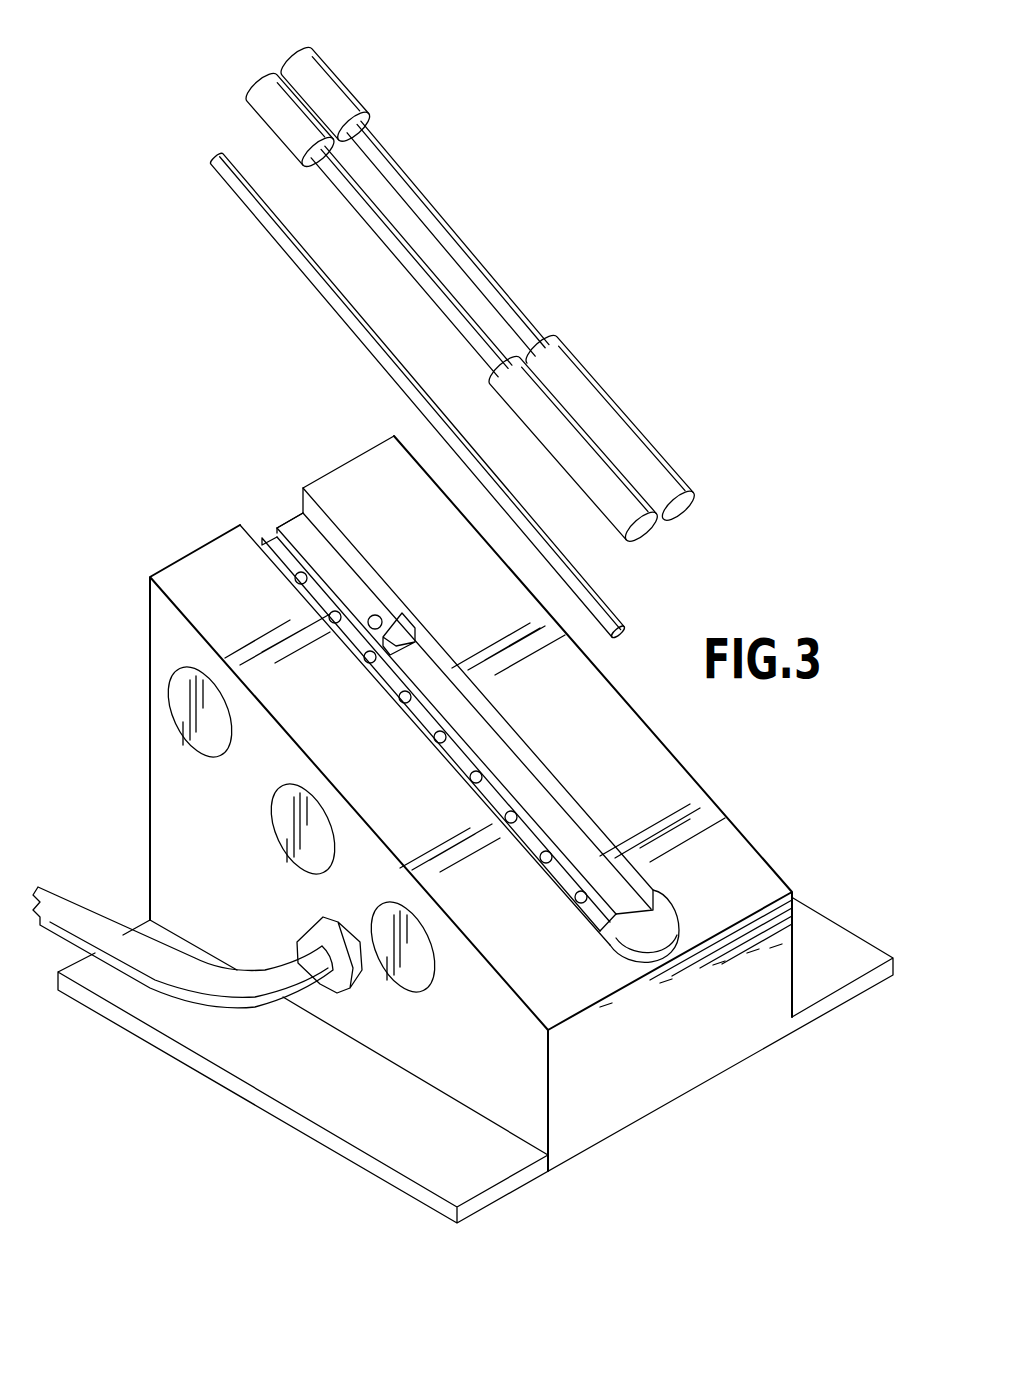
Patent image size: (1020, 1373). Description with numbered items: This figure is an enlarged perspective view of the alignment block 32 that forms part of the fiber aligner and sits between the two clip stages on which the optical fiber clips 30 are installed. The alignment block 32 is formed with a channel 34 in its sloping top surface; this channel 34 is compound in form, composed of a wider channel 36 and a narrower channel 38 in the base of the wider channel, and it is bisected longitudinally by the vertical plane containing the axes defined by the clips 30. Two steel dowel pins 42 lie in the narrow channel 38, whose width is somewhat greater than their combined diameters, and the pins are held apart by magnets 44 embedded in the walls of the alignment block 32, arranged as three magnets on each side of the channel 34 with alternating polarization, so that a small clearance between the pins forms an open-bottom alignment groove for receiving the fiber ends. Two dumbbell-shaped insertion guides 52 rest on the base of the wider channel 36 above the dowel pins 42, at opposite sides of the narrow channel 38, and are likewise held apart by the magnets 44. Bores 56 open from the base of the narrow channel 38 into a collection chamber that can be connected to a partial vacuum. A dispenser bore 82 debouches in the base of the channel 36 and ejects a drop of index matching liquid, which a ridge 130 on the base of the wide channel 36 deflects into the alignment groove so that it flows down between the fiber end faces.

The optical fiber clip 30 is at (668, 920).
The alignment block 32 is at (148, 600).
The channel 34 is at (297, 527).
The wider channel 36 is at (510, 737).
The narrower channel 38 is at (540, 838).
The steel dowel pins 42 is at (238, 153).
The magnets 44 is at (290, 810).
The insertion guides 52 is at (267, 77).
The bores 56 is at (297, 580).
The dispenser bore 82 is at (380, 614).
The ridge 130 is at (420, 630).